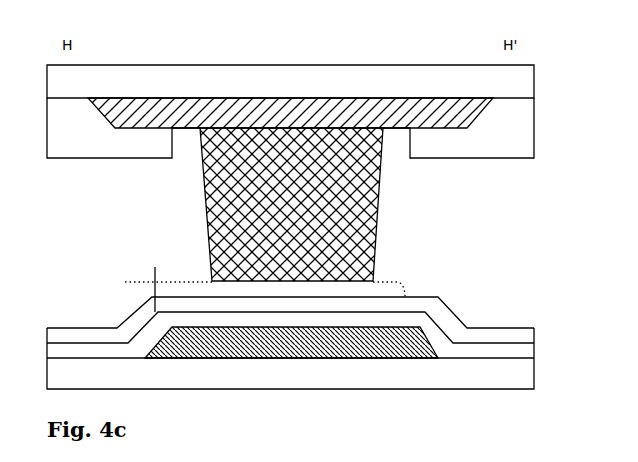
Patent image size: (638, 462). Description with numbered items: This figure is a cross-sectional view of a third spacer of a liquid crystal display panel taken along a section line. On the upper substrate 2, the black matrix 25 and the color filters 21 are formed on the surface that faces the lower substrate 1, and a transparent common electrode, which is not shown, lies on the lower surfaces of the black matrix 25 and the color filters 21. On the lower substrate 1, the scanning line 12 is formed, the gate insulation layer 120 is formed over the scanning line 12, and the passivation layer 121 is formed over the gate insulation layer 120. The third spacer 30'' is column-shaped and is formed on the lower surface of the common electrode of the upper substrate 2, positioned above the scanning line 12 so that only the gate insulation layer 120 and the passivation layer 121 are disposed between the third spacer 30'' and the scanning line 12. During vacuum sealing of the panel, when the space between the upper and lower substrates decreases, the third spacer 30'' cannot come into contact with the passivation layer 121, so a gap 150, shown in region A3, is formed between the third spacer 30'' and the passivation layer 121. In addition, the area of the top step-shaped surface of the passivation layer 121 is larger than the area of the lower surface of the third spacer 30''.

The lower substrate 1 is at (515, 377).
The upper substrate 2 is at (517, 86).
The scanning line 12 is at (414, 334).
The color filters 21 is at (517, 137).
The black matrix 25 is at (490, 107).
The third spacer 30'' is at (336, 204).
The gate insulation layer 120 is at (515, 351).
The passivation layer 121 is at (515, 336).
The gap 150 is at (150, 296).
The region A3 is at (400, 290).